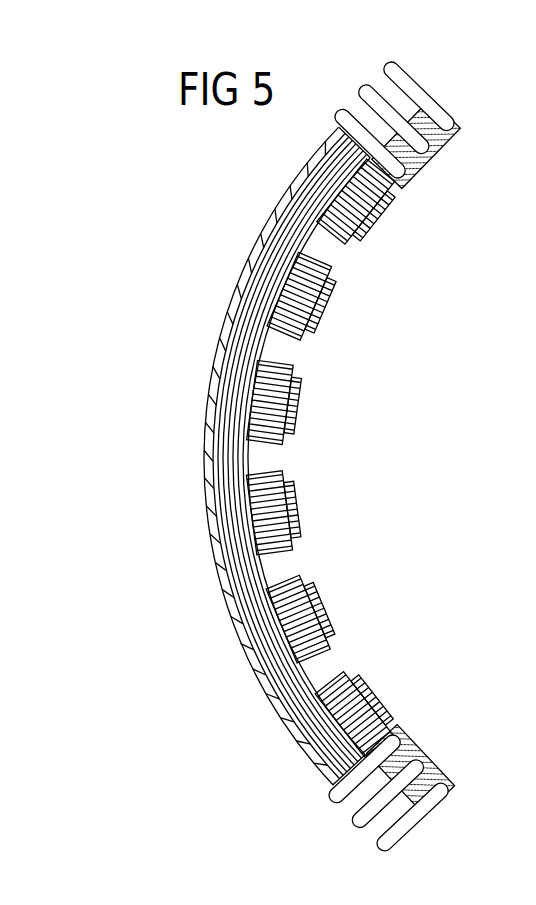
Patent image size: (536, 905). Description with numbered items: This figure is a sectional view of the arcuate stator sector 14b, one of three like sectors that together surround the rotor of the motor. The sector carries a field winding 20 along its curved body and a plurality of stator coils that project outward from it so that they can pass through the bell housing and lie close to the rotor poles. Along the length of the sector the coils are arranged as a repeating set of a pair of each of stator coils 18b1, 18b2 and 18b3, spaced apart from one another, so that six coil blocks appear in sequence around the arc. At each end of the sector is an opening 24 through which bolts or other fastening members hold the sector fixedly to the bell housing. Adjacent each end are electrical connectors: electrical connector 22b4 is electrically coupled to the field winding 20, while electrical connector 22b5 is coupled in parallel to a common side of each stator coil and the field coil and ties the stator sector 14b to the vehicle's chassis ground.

The stator sector 14b is at (276, 455).
The field winding 20 is at (268, 280).
The stator coil 18b1 is at (365, 218).
The stator coil 18b2 is at (313, 316).
The stator coil 18b3 is at (298, 390).
The electrical connector 22b4 is at (356, 84).
The electrical connector 22b5 is at (338, 102).
The opening 24 is at (443, 132).